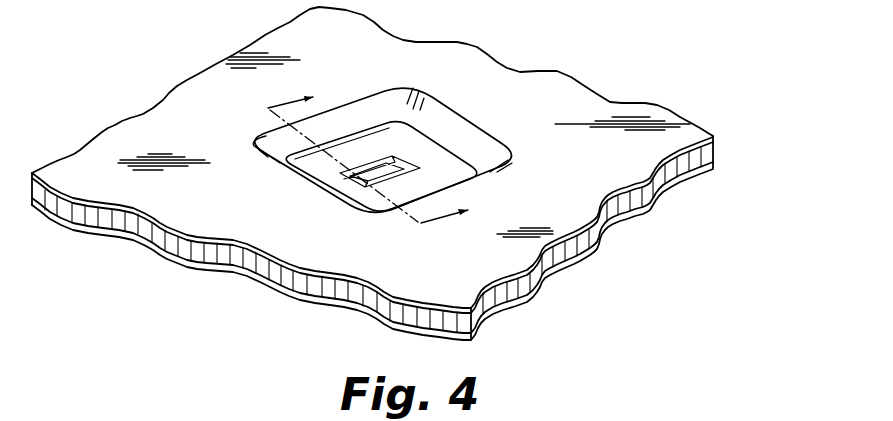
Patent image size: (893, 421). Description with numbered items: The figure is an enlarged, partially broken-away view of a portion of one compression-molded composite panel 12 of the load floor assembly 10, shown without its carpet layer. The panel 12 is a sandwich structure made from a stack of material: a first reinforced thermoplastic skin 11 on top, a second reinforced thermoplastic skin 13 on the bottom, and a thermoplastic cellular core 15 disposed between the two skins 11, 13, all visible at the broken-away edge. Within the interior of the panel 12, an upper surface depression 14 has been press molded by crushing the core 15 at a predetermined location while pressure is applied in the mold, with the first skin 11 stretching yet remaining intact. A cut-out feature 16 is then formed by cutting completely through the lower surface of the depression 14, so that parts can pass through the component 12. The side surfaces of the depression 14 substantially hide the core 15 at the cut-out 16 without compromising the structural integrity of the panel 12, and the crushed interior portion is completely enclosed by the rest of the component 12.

The load floor assembly 10 is at (325, 175).
The first reinforced thermoplastic skin 11 is at (713, 136).
The compression-molded composite panel 12 is at (558, 72).
The second reinforced thermoplastic skin 13 is at (713, 167).
The upper surface depression 14 is at (400, 138).
The thermoplastic cellular core 15 is at (717, 150).
The cut-out feature 16 is at (407, 157).